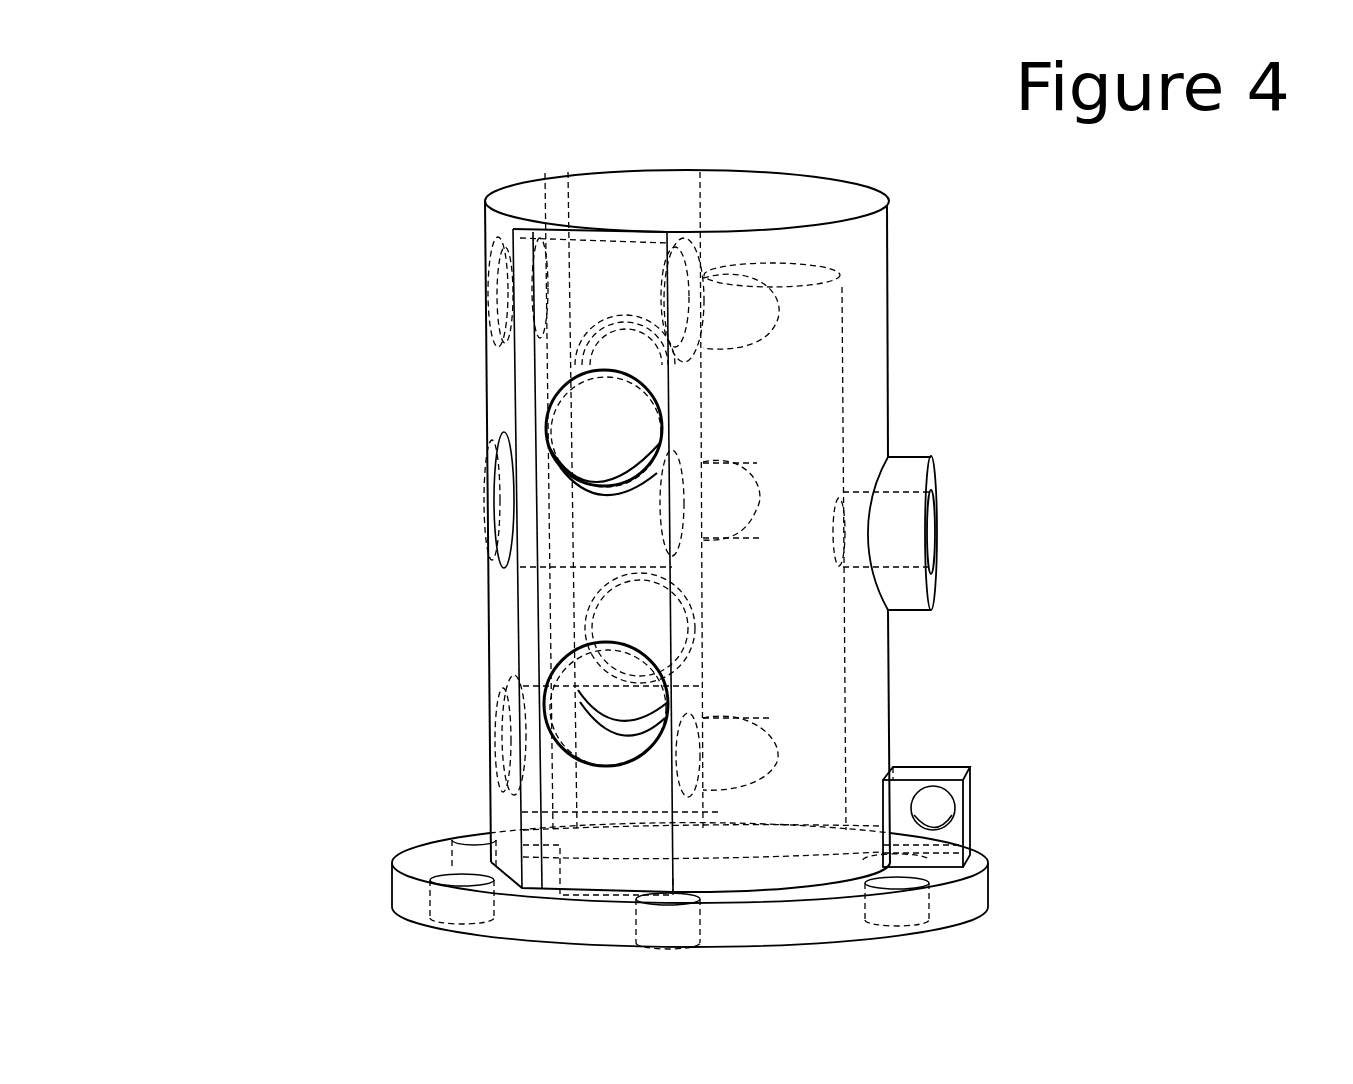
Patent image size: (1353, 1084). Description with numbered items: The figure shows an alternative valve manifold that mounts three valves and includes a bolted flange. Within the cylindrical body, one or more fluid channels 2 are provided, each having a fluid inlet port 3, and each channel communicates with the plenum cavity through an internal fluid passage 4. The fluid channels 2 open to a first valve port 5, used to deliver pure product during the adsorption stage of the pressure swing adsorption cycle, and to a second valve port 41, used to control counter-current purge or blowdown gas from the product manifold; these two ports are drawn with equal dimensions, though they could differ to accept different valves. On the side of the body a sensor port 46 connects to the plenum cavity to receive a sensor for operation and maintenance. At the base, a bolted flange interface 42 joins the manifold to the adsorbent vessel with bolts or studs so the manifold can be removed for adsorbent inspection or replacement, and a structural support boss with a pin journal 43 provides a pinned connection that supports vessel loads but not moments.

The fluid channel 2 is at (627, 620).
The fluid inlet port 3 is at (603, 748).
The fluid passage 4 is at (750, 748).
The first valve port 5 is at (488, 515).
The second valve port 41 is at (531, 282).
The bolted flange interface 42 is at (433, 860).
The pin journal 43 is at (945, 800).
The sensor port 46 is at (935, 533).